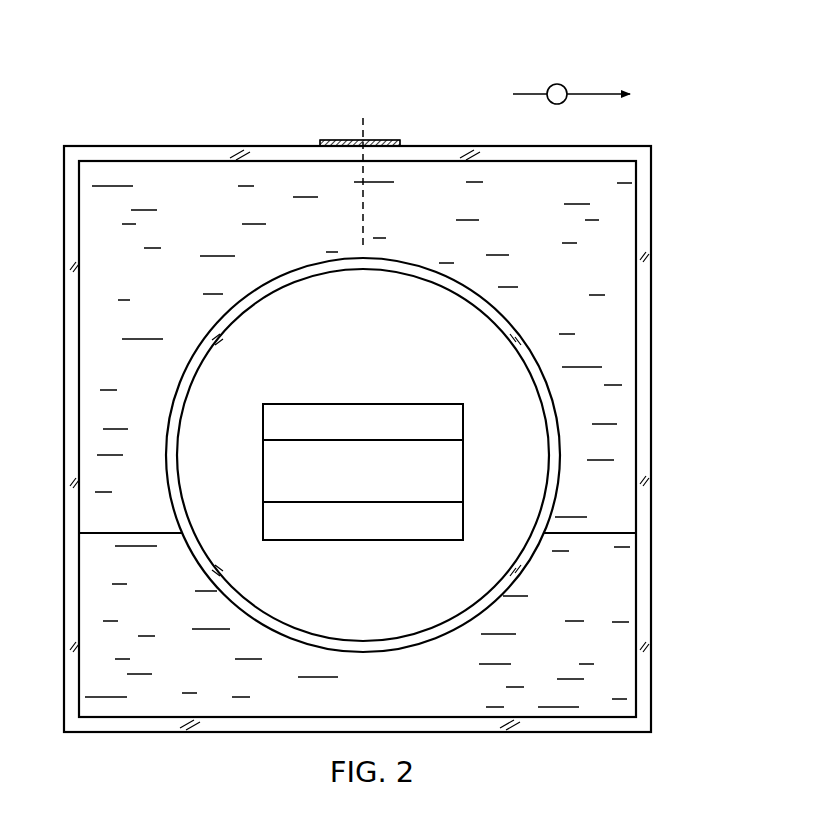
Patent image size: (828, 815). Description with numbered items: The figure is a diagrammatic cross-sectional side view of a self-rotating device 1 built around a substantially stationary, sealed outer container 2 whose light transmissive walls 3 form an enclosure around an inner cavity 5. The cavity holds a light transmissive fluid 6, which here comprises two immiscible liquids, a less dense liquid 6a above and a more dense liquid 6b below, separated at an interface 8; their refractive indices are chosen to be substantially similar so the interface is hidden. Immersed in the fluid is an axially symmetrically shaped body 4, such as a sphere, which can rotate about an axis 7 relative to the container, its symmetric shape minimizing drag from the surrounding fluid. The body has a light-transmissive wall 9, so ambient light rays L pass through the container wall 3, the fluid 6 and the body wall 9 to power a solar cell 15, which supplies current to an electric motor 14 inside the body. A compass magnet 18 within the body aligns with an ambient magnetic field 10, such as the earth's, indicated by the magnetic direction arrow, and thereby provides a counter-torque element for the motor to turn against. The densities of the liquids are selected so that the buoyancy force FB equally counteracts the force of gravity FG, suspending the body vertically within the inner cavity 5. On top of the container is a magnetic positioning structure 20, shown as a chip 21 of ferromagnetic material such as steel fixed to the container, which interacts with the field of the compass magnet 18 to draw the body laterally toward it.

The self-rotating device 1 is at (712, 160).
The outer container 2 is at (652, 281).
The light transmissive walls 3 is at (102, 152).
The axially symmetrically shaped body 4 is at (538, 318).
The inner cavity 5 is at (110, 279).
The light transmissive fluid 6 is at (516, 220).
The less dense liquid 6a is at (582, 504).
The more dense liquid 6b is at (581, 591).
The axis 7 is at (361, 215).
The interface 8 is at (620, 533).
The light-transmissive wall 9 is at (222, 325).
The ambient magnetic field 10 is at (556, 84).
The electric motor 14 is at (464, 505).
The solar cell 15 is at (464, 418).
The compass magnet 18 is at (464, 458).
The magnetic positioning structure 20 is at (319, 130).
The chip 21 is at (393, 139).
The ambient light rays L is at (296, 388).
The force of gravity FG is at (363, 644).
The buoyancy force FB is at (363, 656).